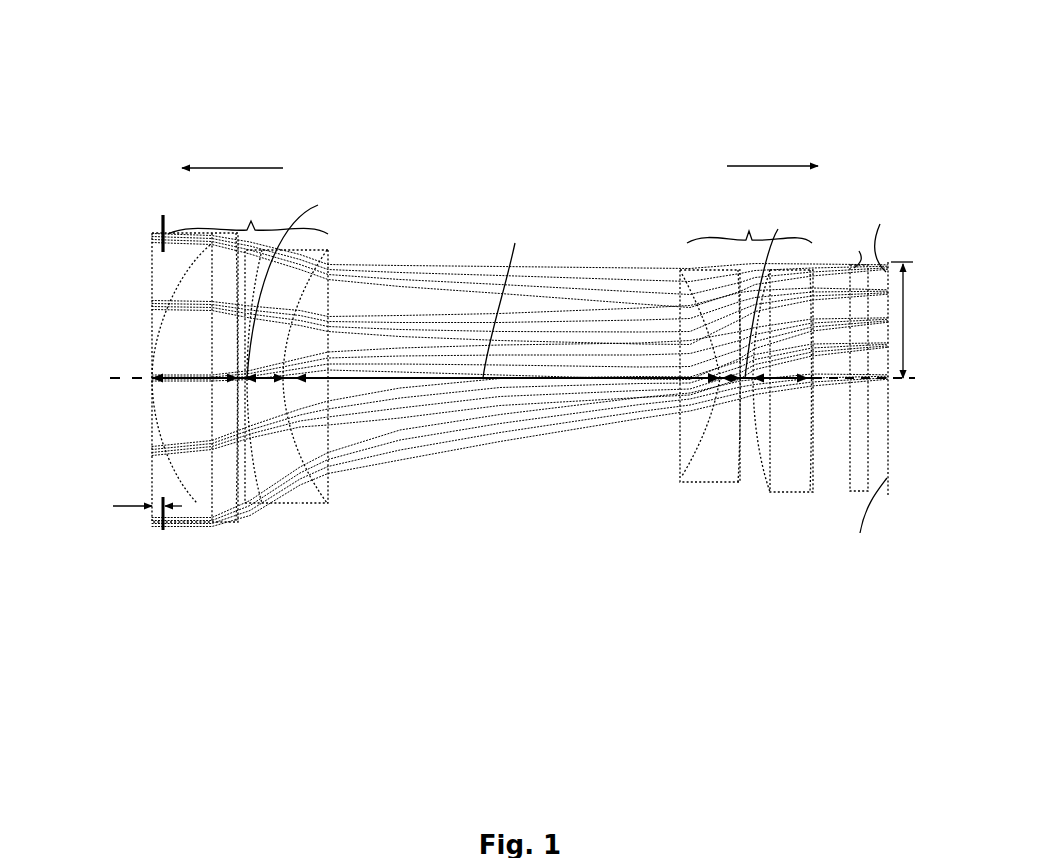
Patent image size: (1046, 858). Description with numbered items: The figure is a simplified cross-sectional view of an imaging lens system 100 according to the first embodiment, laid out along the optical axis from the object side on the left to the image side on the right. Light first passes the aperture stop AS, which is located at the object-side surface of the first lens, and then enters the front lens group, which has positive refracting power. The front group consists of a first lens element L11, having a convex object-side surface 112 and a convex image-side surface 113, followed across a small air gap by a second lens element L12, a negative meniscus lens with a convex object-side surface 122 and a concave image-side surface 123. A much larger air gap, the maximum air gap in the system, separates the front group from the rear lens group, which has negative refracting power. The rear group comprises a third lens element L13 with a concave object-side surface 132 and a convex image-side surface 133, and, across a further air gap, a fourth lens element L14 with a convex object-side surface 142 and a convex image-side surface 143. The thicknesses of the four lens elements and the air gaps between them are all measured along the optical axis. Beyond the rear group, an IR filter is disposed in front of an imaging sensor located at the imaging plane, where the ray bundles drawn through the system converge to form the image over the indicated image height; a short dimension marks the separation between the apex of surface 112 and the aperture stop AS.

The imaging lens system 100 is at (504, 308).
The object-side surface of first lens element 112 is at (197, 500).
The image-side surface of first lens element 113 is at (238, 493).
The object-side surface of second lens element 122 is at (268, 474).
The image-side surface of second lens element 123 is at (313, 464).
The object-side surface of third lens element 132 is at (703, 432).
The image-side surface of third lens element 133 is at (740, 443).
The object-side surface of fourth lens element 142 is at (763, 457).
The image-side surface of fourth lens element 143 is at (812, 448).
The aperture stop AS is at (163, 226).
The first lens element L11 is at (210, 391).
The second lens element L12 is at (306, 401).
The third lens element L13 is at (679, 383).
The fourth lens element L14 is at (786, 388).